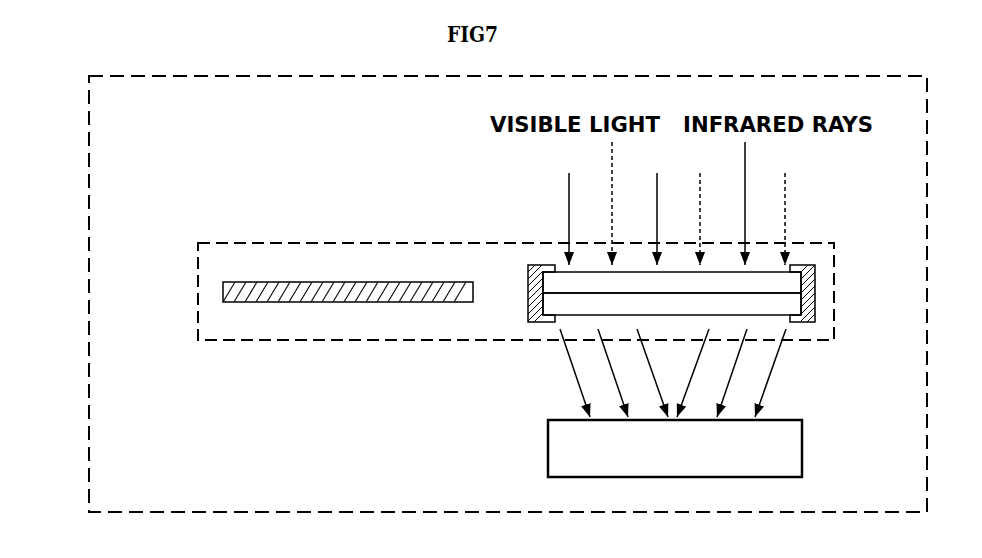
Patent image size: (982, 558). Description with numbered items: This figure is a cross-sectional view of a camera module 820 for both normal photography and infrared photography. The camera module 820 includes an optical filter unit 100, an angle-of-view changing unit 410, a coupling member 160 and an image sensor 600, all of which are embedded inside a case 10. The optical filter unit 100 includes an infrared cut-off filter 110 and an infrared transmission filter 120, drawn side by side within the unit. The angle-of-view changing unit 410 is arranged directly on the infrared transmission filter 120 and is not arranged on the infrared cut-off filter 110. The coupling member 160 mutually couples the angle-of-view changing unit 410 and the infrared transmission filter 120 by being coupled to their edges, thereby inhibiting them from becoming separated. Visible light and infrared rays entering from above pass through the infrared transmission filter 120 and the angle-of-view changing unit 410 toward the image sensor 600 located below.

The case 10 is at (90, 172).
The camera module 820 is at (246, 212).
The optical filter unit 100 is at (382, 242).
The infrared cut-off filter 110 is at (223, 288).
The infrared transmission filter 120 is at (800, 284).
The angle-of-view changing unit 410 is at (802, 304).
The coupling member 160 is at (535, 322).
The image sensor 600 is at (546, 445).